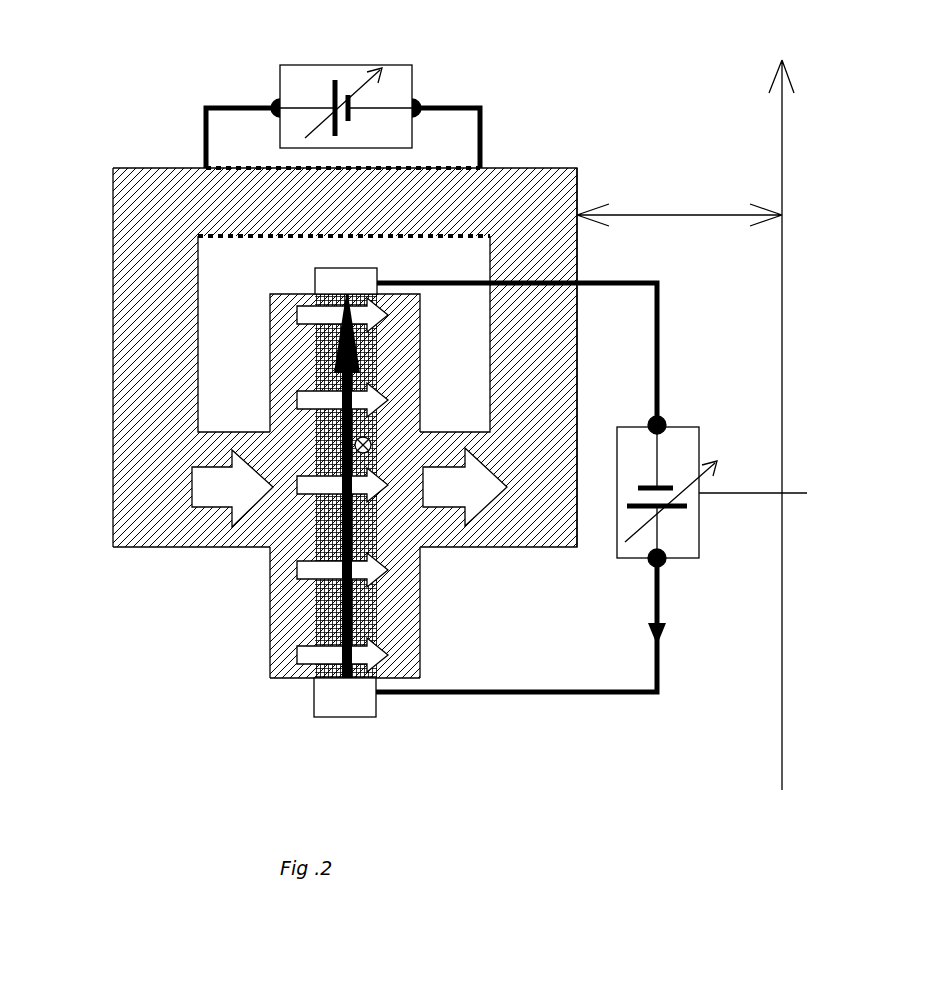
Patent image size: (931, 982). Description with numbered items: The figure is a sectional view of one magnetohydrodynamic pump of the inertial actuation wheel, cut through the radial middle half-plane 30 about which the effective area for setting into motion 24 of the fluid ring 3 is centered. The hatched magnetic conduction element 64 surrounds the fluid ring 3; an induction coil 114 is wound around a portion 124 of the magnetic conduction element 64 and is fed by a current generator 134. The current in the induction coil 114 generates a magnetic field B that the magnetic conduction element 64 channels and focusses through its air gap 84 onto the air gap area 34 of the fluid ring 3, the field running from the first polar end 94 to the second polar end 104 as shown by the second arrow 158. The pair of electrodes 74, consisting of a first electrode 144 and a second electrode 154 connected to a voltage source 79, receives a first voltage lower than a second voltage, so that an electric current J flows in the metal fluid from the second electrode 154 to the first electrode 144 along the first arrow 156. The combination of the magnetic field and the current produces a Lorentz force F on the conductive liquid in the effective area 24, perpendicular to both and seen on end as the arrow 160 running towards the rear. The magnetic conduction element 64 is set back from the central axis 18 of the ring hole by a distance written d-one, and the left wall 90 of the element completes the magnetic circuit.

The radial middle half-plane 30 is at (80, 139).
The portion of the magnetic conduction element 124 is at (162, 168).
The left wall of yoke 90 is at (133, 287).
The magnetic conduction element 64 is at (133, 350).
The air gap area 34 is at (267, 552).
The induction coil 114 is at (457, 168).
The fluid ring 3 is at (422, 555).
The arrow of vector F 160 is at (407, 400).
The first polar end 94 is at (280, 608).
The second polar end 104 is at (422, 610).
The effective area for setting into motion 24 is at (313, 430).
The first arrow 156 is at (303, 620).
The air gap 84 is at (380, 365).
The first electrode 144 is at (357, 268).
The second electrode 154 is at (322, 693).
The pair of electrodes 74 is at (327, 281).
The second arrow 158 is at (188, 503).
The current generator 134 is at (317, 65).
The voltage source 79 is at (700, 520).
The central axis 18 is at (694, 425).